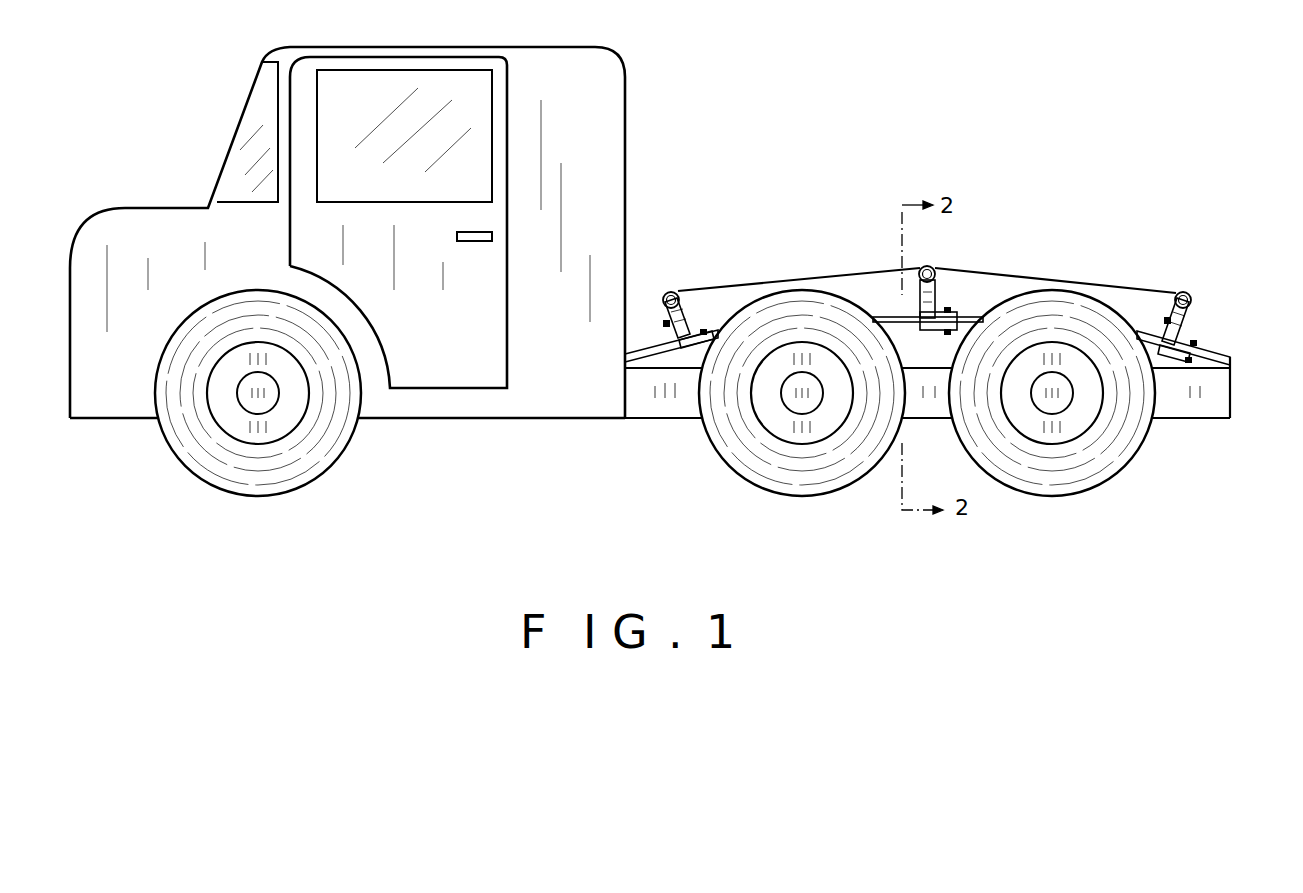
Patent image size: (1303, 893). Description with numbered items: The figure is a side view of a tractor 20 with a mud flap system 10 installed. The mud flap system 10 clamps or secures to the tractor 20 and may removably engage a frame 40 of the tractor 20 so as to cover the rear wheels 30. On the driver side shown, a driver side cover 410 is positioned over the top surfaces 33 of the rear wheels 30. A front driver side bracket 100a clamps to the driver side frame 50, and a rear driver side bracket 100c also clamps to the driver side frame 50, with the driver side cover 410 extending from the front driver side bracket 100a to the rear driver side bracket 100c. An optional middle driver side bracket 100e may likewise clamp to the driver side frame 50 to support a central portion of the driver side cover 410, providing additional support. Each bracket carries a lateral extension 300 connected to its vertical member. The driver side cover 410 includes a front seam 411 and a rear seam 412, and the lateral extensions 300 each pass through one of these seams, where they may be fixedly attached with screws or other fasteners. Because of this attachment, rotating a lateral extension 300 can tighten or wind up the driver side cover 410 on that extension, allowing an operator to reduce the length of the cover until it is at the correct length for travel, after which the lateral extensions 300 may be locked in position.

The mud flap system 10 is at (1130, 251).
The tractor 20 is at (603, 165).
The rear wheels 30 is at (815, 477).
The top surfaces 33 is at (782, 293).
The frame 40 is at (641, 350).
The driver side frame 50 is at (892, 318).
The front driver side bracket 100a is at (626, 357).
The rear driver side bracket 100c is at (1180, 330).
The middle driver side bracket 100e is at (945, 285).
The lateral extension 300 is at (682, 291).
The driver side cover 410 is at (1013, 270).
The front seam 411 is at (668, 291).
The rear seam 412 is at (1189, 291).